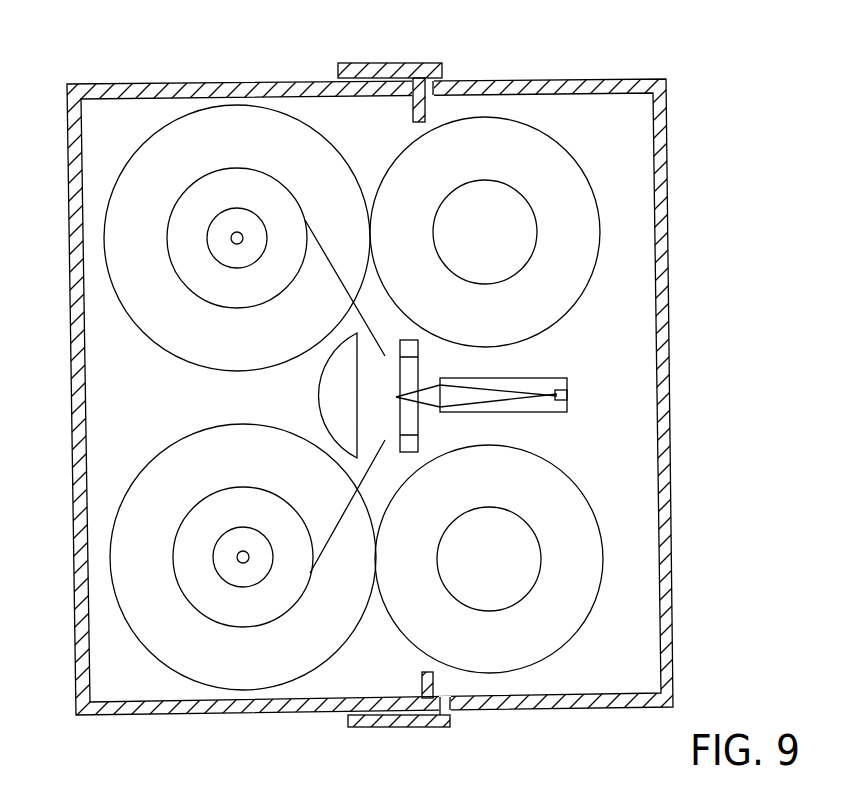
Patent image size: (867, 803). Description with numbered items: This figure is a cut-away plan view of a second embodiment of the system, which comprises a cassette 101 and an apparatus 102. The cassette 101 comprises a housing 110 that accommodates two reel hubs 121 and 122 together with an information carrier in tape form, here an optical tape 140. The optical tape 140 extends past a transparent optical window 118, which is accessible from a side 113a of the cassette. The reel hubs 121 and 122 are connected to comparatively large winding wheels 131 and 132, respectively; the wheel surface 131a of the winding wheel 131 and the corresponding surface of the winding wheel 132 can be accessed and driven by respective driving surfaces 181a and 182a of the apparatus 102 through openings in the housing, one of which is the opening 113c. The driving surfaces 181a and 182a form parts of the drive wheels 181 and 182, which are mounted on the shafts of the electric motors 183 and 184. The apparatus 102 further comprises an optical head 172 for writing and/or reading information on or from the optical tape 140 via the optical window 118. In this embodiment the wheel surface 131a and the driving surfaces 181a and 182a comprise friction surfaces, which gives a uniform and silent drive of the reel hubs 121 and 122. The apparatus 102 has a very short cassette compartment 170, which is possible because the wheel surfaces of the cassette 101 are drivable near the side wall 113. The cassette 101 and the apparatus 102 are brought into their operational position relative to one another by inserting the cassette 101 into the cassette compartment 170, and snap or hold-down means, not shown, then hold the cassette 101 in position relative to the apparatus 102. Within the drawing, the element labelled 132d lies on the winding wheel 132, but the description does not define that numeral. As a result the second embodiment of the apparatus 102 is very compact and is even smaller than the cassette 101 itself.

The housing 110 is at (68, 84).
The cassette 101 is at (175, 732).
The apparatus 102 is at (582, 722).
The side wall 113 is at (422, 673).
The side of the cassette 113a is at (600, 364).
The opening 113c is at (420, 128).
The optical window 118 is at (417, 368).
The reel hub 121 is at (232, 538).
The reel hub 122 is at (236, 208).
The winding wheel 131 is at (158, 467).
The wheel surface 131a is at (278, 687).
The winding wheel 132 is at (168, 332).
The tape pack 132d is at (307, 123).
The optical tape 140 is at (362, 323).
The cassette compartment 170 is at (347, 713).
The optical head 172 is at (570, 400).
The drive wheel 181 is at (550, 480).
The driving surface 181a is at (519, 674).
The drive wheel 182 is at (550, 148).
The driving surface 182a is at (400, 152).
The electric motor 183 is at (542, 557).
The electric motor 184 is at (538, 232).